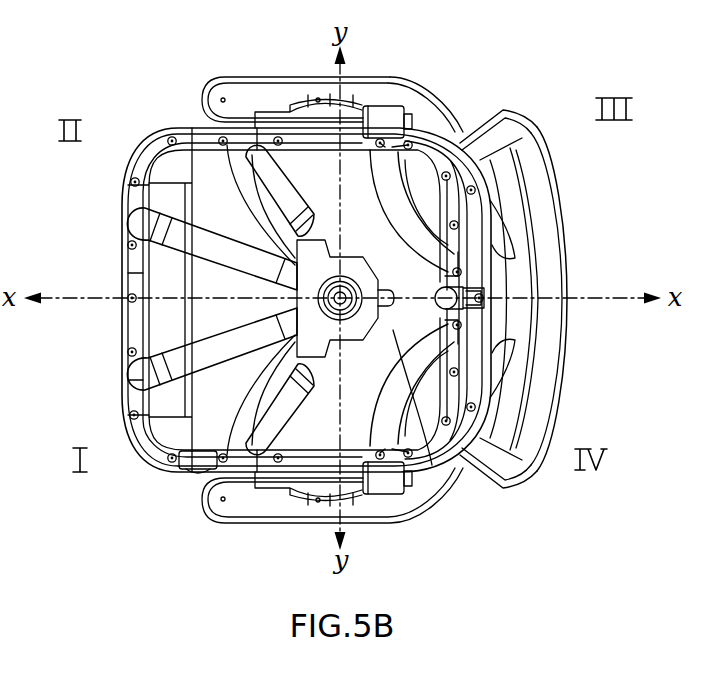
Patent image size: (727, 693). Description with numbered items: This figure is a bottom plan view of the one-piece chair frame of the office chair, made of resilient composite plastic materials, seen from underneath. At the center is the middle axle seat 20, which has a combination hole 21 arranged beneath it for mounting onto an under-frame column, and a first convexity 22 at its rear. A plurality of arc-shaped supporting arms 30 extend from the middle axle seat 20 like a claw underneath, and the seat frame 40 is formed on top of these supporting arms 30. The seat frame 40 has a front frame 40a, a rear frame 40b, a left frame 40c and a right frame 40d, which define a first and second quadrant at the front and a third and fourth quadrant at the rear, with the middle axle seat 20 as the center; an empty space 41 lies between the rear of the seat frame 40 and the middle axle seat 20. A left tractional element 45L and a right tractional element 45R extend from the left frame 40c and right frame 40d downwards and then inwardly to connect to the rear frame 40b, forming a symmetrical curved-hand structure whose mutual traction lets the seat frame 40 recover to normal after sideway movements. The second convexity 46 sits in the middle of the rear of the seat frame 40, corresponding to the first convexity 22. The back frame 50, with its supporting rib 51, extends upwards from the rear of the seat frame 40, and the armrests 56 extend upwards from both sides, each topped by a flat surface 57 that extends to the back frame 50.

The middle axle seat 20 is at (326, 236).
The combination hole 21 is at (252, 155).
The first convexity 22 is at (470, 340).
The supporting arms 30 is at (260, 427).
The seat frame 40 is at (143, 118).
The front frame 40a is at (120, 262).
The rear frame 40b is at (477, 227).
The left frame 40c is at (203, 133).
The right frame 40d is at (265, 462).
The empty space 41 is at (467, 462).
The left tractional element 45L is at (398, 198).
The right tractional element 45R is at (424, 468).
The second convexity 46 is at (476, 283).
The back frame 50 is at (503, 117).
The supporting rib 51 is at (503, 378).
The armrests 56 is at (347, 107).
The flat surface 57 is at (407, 97).